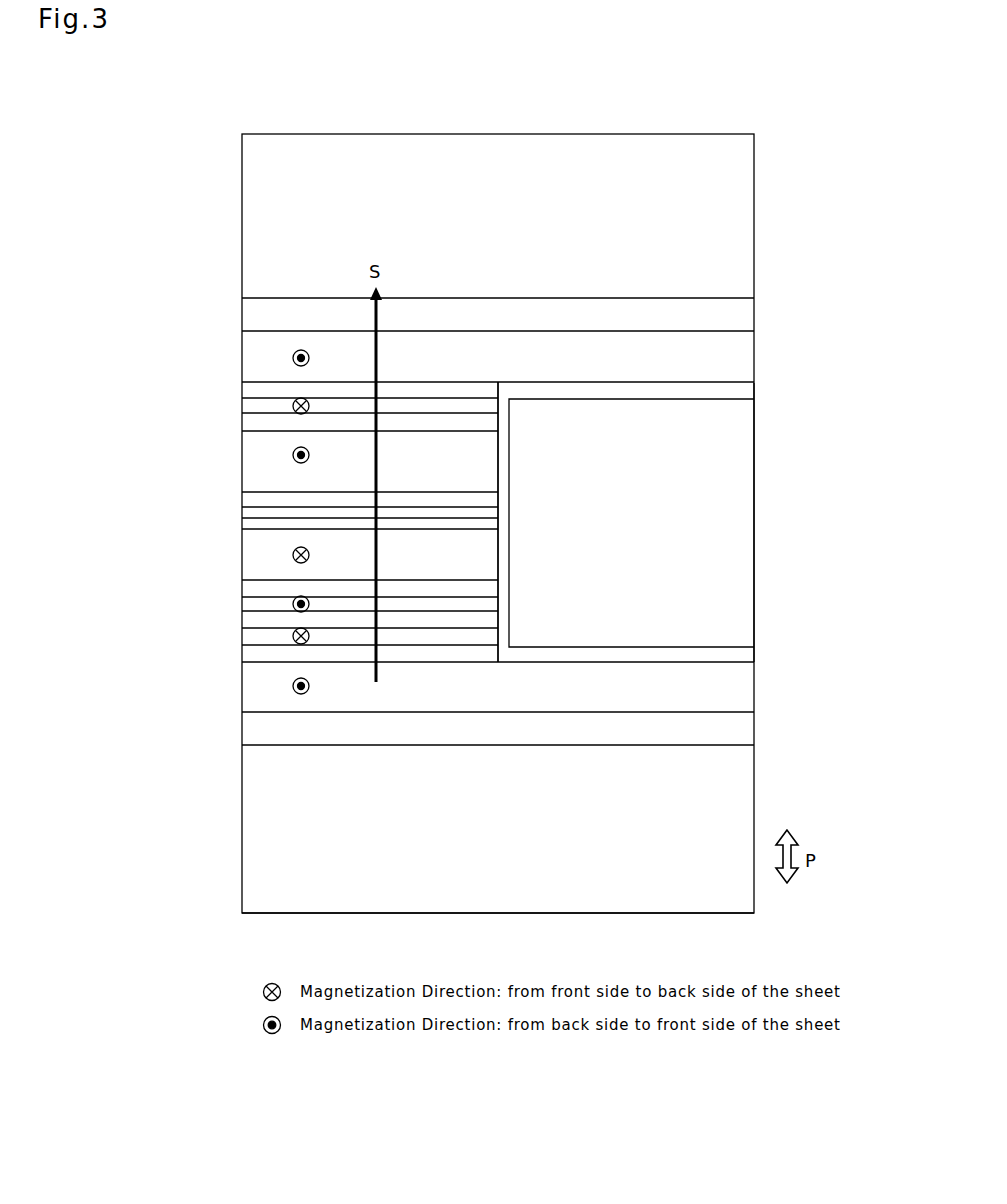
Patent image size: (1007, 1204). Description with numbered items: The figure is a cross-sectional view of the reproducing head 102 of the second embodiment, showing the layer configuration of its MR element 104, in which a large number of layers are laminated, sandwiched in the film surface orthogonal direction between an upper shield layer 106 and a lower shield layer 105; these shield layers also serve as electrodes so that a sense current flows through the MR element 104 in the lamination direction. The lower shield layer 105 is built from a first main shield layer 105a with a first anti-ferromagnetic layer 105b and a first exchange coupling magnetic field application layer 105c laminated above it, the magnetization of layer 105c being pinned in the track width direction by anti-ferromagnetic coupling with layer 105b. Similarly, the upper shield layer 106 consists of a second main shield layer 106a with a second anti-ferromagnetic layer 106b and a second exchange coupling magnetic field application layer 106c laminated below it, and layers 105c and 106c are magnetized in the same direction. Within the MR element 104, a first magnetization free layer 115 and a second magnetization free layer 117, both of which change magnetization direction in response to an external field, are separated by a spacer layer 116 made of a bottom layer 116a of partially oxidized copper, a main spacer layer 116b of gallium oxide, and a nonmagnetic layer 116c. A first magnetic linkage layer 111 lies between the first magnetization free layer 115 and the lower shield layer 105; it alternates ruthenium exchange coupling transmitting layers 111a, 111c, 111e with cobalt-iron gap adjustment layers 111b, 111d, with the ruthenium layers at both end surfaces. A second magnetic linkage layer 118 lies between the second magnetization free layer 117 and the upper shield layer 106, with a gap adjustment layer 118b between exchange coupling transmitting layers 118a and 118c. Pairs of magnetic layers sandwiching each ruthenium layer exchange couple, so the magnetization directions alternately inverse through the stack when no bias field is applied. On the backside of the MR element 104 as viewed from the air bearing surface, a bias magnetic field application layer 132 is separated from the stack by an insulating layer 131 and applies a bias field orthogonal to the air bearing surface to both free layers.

The reproducing head 102 is at (464, 122).
The MR element 104 is at (403, 524).
The lower shield layer 105 is at (429, 795).
The first main shield layer 105a is at (453, 865).
The first anti-ferromagnetic layer 105b is at (242, 727).
The first exchange coupling magnetic field application layer 105c is at (242, 686).
The upper shield layer 106 is at (429, 296).
The second main shield layer 106a is at (242, 222).
The second anti-ferromagnetic layer 106b is at (242, 318).
The second exchange coupling magnetic field application layer 106c is at (453, 366).
The first magnetic linkage layer 111 is at (429, 625).
The exchange coupling transmitting layer 111a is at (242, 654).
The gap adjustment layer 111b is at (242, 637).
The exchange coupling transmitting layer 111c is at (242, 621).
The gap adjustment layer 111d is at (242, 604).
The exchange coupling transmitting layer 111e is at (242, 588).
The first magnetization free layer 115 is at (242, 556).
The spacer layer 116 is at (301, 518).
The bottom layer 116a is at (242, 528).
The main spacer layer 116b is at (242, 514).
The nonmagnetic layer 116c is at (242, 497).
The second magnetization free layer 117 is at (242, 453).
The second magnetic linkage layer 118 is at (301, 408).
The exchange coupling transmitting layer 118a is at (242, 424).
The gap adjustment layer 118b is at (242, 404).
The exchange coupling transmitting layer 118c is at (242, 386).
The insulating layer 131 is at (745, 656).
The bias magnetic field application layer 132 is at (745, 514).